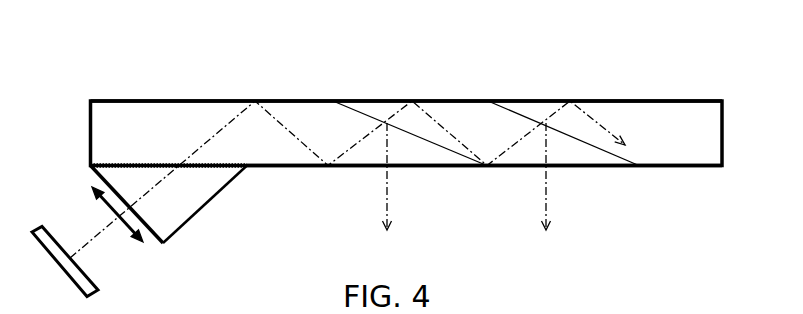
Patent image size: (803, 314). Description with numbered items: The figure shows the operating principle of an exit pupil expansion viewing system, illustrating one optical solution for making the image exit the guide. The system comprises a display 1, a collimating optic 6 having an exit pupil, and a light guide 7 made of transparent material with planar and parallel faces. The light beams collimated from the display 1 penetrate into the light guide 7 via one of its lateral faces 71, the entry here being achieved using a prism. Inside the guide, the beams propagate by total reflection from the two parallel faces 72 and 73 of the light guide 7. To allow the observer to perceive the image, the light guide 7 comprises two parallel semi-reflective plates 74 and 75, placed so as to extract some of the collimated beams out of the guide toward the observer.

The display 1 is at (95, 290).
The collimating optic 6 is at (91, 190).
The light guide 7 is at (105, 129).
The lateral face 71 is at (165, 245).
The parallel face 72 is at (380, 100).
The parallel face 73 is at (328, 167).
The semi-reflective plate 74 is at (413, 138).
The semi-reflective plate 75 is at (578, 140).